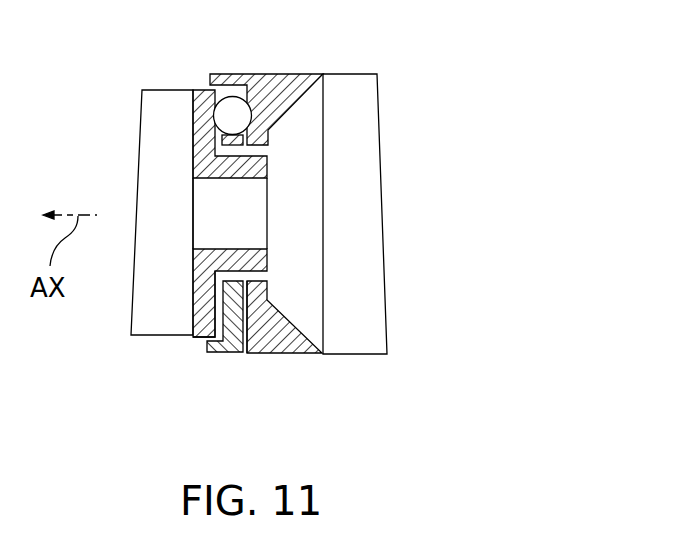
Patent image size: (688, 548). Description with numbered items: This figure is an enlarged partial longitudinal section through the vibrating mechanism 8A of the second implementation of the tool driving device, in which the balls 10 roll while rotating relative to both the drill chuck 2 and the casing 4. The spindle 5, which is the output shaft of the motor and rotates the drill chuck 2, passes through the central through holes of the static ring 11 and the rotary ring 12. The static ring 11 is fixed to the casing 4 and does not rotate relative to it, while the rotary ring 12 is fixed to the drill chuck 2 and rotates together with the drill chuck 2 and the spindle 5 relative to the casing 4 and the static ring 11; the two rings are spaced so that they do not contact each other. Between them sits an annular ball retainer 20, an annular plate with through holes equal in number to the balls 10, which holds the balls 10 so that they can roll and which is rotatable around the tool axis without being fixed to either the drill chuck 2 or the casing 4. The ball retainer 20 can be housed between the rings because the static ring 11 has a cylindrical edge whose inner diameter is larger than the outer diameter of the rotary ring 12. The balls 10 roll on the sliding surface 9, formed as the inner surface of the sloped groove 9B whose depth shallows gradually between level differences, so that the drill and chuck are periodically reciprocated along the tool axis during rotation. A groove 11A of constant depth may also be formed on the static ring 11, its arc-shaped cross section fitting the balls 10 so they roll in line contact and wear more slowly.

The drill chuck 2 is at (152, 337).
The casing 4 is at (353, 355).
The spindle 5 is at (208, 201).
The vibrating mechanism 8A is at (260, 89).
The sliding surface 9 is at (213, 97).
The balls 10 is at (238, 112).
The static ring 11 is at (278, 352).
The groove 11A is at (248, 301).
The rotary ring 12 is at (200, 335).
The ball retainer 20 is at (193, 297).
The groove 9B is at (212, 301).